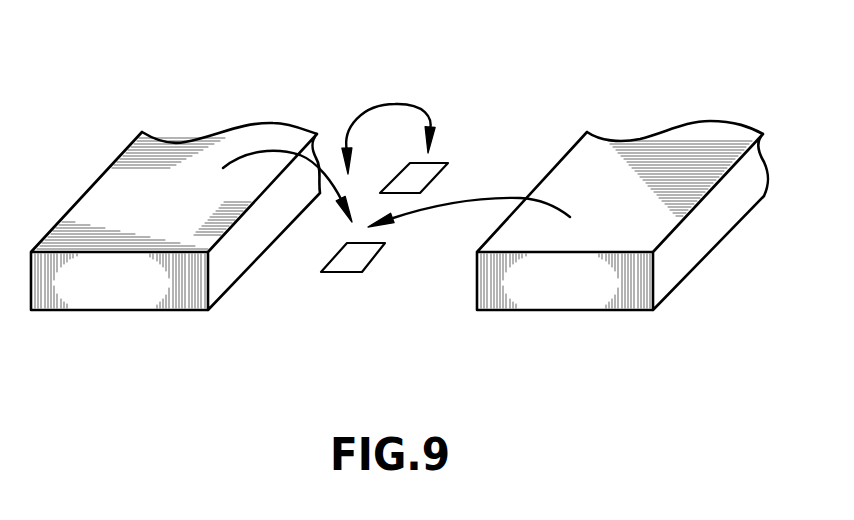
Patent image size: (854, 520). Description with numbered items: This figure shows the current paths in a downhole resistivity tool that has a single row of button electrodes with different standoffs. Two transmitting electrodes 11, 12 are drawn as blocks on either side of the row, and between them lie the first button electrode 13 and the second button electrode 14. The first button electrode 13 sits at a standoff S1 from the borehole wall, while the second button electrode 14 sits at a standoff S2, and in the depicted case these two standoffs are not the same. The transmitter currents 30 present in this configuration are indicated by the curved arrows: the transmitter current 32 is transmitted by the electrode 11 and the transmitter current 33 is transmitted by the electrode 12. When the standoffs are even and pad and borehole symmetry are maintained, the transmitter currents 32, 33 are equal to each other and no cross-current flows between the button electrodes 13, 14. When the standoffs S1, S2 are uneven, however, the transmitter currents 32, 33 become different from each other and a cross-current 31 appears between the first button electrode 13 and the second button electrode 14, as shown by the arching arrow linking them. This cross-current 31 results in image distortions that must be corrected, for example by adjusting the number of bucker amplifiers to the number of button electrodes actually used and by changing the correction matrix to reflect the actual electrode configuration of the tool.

The electrode 11 is at (112, 318).
The electrode 12 is at (578, 318).
The first button electrode 13 is at (325, 323).
The second button electrode 14 is at (495, 140).
The standoff S1 is at (332, 290).
The standoff S2 is at (447, 183).
The transmitter currents 30 is at (405, 125).
The cross-current 31 is at (418, 103).
The transmitter current 32 is at (252, 186).
The transmitter current 33 is at (513, 223).